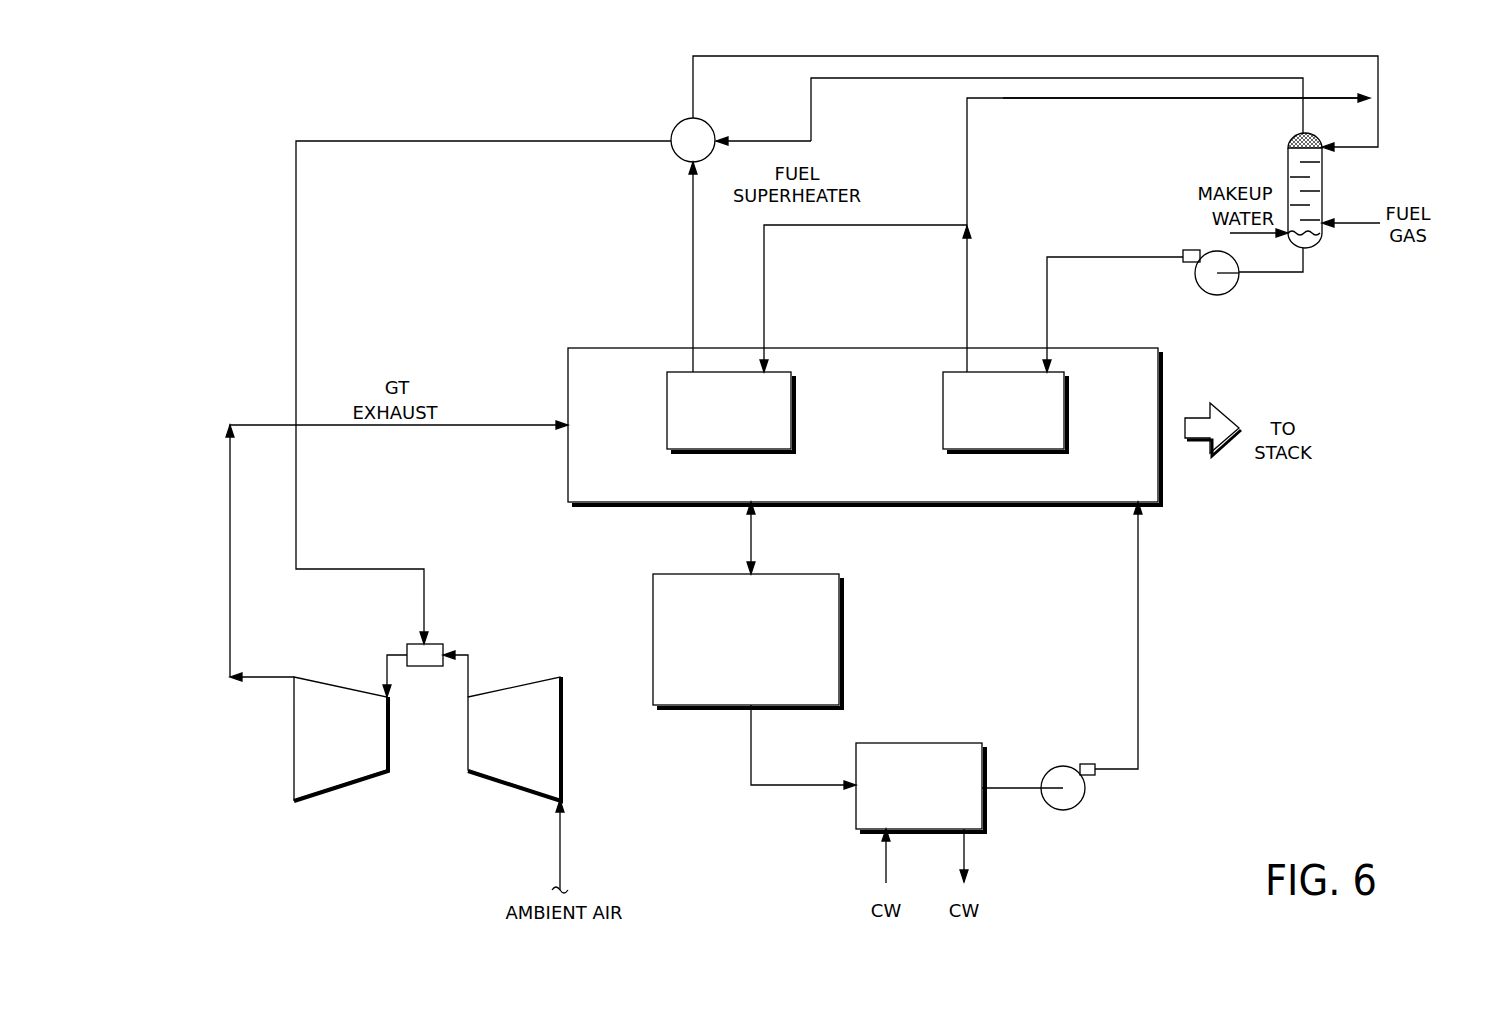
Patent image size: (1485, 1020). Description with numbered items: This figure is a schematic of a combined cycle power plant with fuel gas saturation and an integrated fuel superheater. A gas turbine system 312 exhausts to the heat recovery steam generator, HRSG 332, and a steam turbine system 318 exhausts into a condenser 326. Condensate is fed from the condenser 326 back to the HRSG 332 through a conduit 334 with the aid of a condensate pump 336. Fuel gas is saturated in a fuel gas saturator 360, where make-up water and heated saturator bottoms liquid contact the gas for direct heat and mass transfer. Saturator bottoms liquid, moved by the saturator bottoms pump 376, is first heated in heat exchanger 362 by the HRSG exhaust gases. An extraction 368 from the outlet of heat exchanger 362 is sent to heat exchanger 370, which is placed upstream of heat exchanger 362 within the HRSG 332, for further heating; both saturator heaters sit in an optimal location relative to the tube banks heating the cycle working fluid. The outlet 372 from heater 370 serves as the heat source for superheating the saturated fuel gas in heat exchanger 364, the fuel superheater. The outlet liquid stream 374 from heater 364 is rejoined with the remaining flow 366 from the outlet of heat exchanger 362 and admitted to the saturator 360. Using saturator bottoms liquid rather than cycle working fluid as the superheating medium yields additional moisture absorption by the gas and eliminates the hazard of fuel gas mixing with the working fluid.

The gas turbine system 312 is at (520, 650).
The steam turbine system 318 is at (878, 614).
The condenser 326 is at (945, 743).
The HRSG 332 is at (967, 505).
The conduit 334 is at (1138, 621).
The condensate pump 336 is at (1065, 810).
The fuel gas saturator 360 is at (1322, 178).
The heat exchanger (saturator heater) 362 is at (1064, 416).
The heat exchanger (fuel superheater) 364 is at (680, 158).
The heated water line to saturator 366 is at (1035, 110).
The extraction 368 is at (876, 227).
The heat exchanger (saturator heater) 370 is at (791, 400).
The outlet 372 is at (693, 270).
The outlet liquid stream 374 is at (693, 74).
The saturator bottoms pump 376 is at (1210, 293).